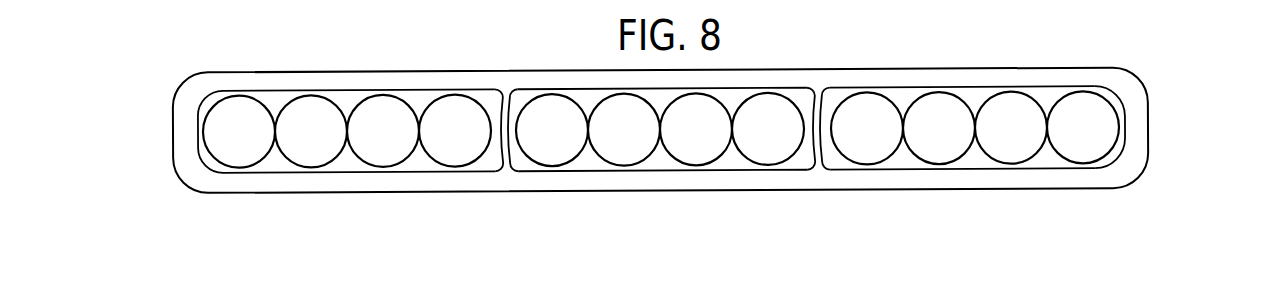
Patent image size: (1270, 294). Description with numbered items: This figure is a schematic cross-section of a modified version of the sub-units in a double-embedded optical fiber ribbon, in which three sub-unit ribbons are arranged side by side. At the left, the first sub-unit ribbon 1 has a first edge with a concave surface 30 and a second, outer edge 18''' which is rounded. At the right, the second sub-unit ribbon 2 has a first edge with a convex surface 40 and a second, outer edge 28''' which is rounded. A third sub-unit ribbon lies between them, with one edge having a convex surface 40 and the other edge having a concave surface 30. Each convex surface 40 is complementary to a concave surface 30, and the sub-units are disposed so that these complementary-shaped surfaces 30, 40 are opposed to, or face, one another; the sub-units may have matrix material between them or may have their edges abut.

The first sub-unit ribbon 1 is at (645, 165).
The second sub-unit ribbon 2 is at (992, 173).
The rounded edge 18''' is at (291, 131).
The rounded edge 28''' is at (1165, 126).
The concave surface 30 is at (488, 156).
The convex surface 40 is at (515, 115).